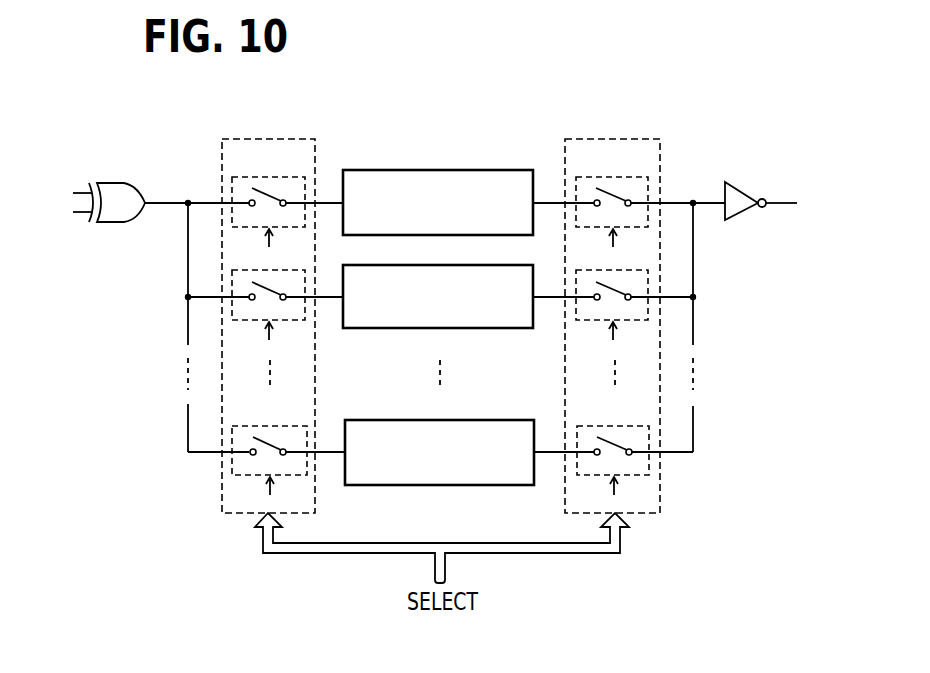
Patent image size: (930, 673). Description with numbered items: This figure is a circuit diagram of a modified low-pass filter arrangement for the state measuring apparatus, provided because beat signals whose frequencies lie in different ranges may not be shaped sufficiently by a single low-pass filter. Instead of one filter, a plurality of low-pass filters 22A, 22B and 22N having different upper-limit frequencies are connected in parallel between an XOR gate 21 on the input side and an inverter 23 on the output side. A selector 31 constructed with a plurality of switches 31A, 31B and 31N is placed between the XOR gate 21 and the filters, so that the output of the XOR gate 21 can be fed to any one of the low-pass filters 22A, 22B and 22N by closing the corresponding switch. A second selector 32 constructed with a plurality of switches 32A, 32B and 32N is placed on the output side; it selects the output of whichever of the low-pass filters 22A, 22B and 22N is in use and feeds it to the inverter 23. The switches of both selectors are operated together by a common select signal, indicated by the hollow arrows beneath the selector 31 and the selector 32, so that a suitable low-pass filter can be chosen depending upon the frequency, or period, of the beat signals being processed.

The XOR gate 21 is at (126, 184).
The low-pass filter 22A is at (480, 170).
The low-pass filter 22B is at (482, 265).
The low-pass filter 22N is at (465, 485).
The inverter 23 is at (747, 188).
The selector 31 is at (262, 136).
The switch 31A is at (247, 176).
The switch 31B is at (232, 270).
The switch 31N is at (231, 464).
The selector 32 is at (618, 136).
The switch 32A is at (652, 182).
The switch 32B is at (650, 274).
The switch 32N is at (640, 478).